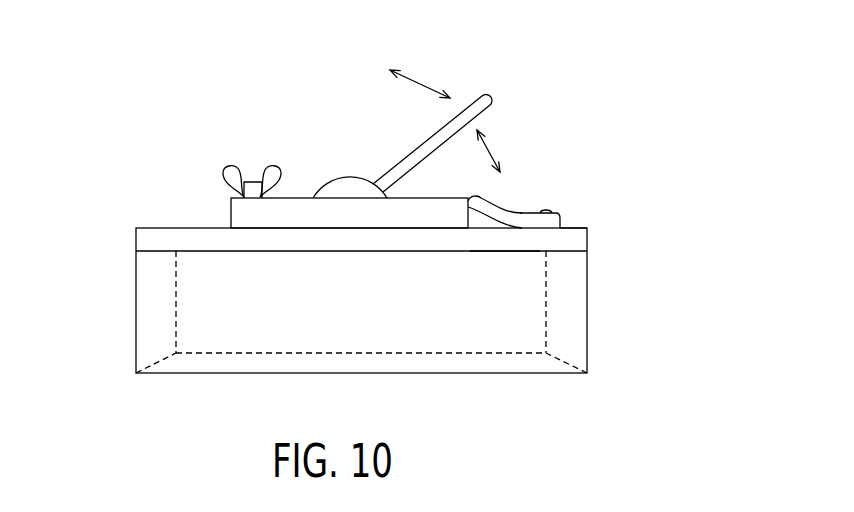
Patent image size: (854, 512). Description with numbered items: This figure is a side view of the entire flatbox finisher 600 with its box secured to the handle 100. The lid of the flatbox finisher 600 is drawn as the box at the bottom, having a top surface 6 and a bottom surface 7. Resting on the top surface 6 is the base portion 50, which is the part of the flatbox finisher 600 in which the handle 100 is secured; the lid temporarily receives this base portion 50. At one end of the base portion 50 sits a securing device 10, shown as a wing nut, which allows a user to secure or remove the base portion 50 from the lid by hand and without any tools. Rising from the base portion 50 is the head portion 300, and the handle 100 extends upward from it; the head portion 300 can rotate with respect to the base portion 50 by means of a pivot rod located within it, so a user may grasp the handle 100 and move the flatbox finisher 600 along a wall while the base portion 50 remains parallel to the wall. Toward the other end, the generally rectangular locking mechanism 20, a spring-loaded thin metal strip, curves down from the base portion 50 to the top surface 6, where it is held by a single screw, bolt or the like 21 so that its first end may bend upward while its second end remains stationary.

The flatbox finisher 600 is at (136, 312).
The bottom surface 7 is at (505, 252).
The top surface 6 is at (577, 226).
The base portion 50 is at (410, 198).
The head portion 300 is at (347, 177).
The handle 100 is at (430, 133).
The securing device 10 is at (232, 173).
The generally rectangular locking mechanism 20 is at (523, 213).
The screw, bolt or the like 21 is at (548, 212).